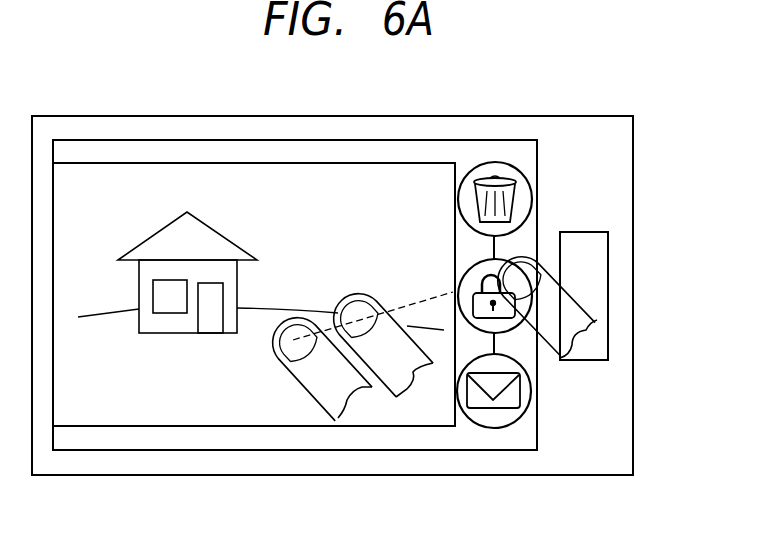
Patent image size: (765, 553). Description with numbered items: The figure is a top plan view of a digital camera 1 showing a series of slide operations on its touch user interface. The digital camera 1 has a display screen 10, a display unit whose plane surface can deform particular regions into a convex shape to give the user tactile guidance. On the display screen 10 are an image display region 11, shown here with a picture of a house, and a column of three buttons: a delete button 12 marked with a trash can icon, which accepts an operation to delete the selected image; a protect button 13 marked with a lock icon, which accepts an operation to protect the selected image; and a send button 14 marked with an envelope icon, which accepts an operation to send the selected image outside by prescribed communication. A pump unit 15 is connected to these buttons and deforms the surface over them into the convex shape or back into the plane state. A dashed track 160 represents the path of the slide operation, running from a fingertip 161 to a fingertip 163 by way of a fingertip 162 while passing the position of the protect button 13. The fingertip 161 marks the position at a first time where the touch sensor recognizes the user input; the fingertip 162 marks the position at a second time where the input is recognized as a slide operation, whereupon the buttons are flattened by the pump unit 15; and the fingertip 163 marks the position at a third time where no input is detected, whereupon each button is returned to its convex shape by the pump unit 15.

The digital camera 1 is at (575, 128).
The display screen 10 is at (298, 150).
The image display region 11 is at (202, 177).
The delete button 12 is at (500, 163).
The protect button 13 is at (512, 330).
The send button 14 is at (493, 428).
The pump unit 15 is at (609, 271).
The track 160 is at (420, 297).
The fingertip 161 is at (318, 393).
The fingertip 162 is at (387, 393).
The fingertip 163 is at (597, 320).